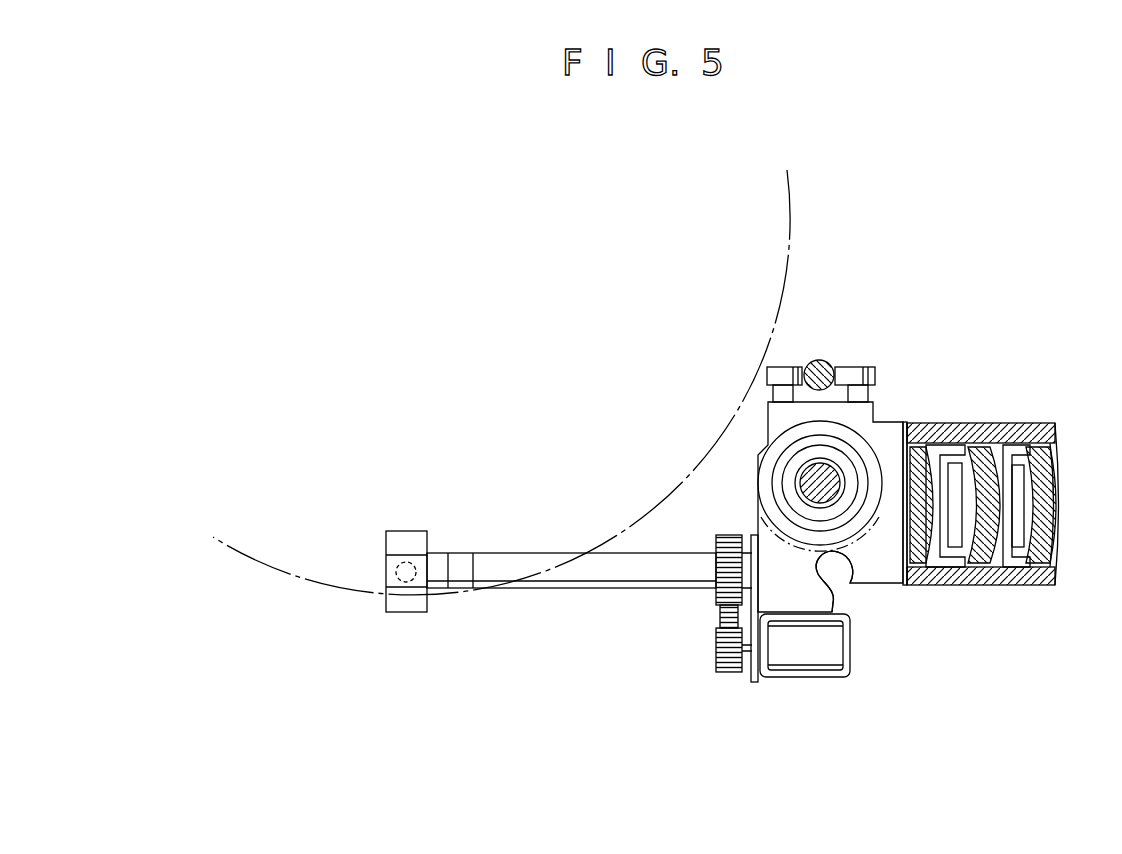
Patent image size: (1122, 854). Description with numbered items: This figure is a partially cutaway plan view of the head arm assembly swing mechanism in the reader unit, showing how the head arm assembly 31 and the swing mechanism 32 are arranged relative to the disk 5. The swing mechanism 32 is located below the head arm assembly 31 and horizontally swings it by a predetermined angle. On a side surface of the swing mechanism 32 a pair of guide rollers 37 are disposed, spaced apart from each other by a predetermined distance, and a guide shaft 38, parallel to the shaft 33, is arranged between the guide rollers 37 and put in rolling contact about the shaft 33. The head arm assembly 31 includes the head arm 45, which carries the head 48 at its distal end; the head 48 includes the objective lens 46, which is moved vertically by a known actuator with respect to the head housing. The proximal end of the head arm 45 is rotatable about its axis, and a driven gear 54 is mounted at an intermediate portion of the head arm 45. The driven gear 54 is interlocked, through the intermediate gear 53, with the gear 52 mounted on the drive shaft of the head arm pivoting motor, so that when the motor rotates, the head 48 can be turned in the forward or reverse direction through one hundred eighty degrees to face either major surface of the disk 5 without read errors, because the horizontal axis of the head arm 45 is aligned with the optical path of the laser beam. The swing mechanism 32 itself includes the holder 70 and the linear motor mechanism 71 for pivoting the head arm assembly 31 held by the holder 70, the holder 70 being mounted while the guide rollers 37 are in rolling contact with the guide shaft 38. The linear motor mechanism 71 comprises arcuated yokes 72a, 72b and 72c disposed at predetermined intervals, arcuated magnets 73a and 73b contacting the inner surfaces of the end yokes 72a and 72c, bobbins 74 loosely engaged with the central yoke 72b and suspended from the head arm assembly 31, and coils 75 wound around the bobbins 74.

The disk 5 is at (780, 222).
The head arm assembly 31 is at (808, 602).
The swing mechanism 32 is at (886, 430).
The shaft 33 is at (800, 483).
The guide rollers 37 is at (784, 378).
The guide shaft 38 is at (820, 360).
The head arm 45 is at (565, 590).
The objective lens 46 is at (415, 587).
The head 48 is at (407, 600).
The gear 52 is at (718, 658).
The intermediate gear 53 is at (720, 620).
The driven gear 54 is at (718, 545).
The holder 70 is at (882, 575).
The linear motor mechanism 71 is at (1017, 447).
The arcuated yoke 72a is at (912, 582).
The arcuated yoke 72b is at (990, 578).
The arcuated yoke 72c is at (1058, 456).
The arcuated magnet 73a is at (940, 566).
The arcuated magnet 73b is at (1050, 507).
The bobbins 74 is at (972, 446).
The coils 75 is at (955, 464).